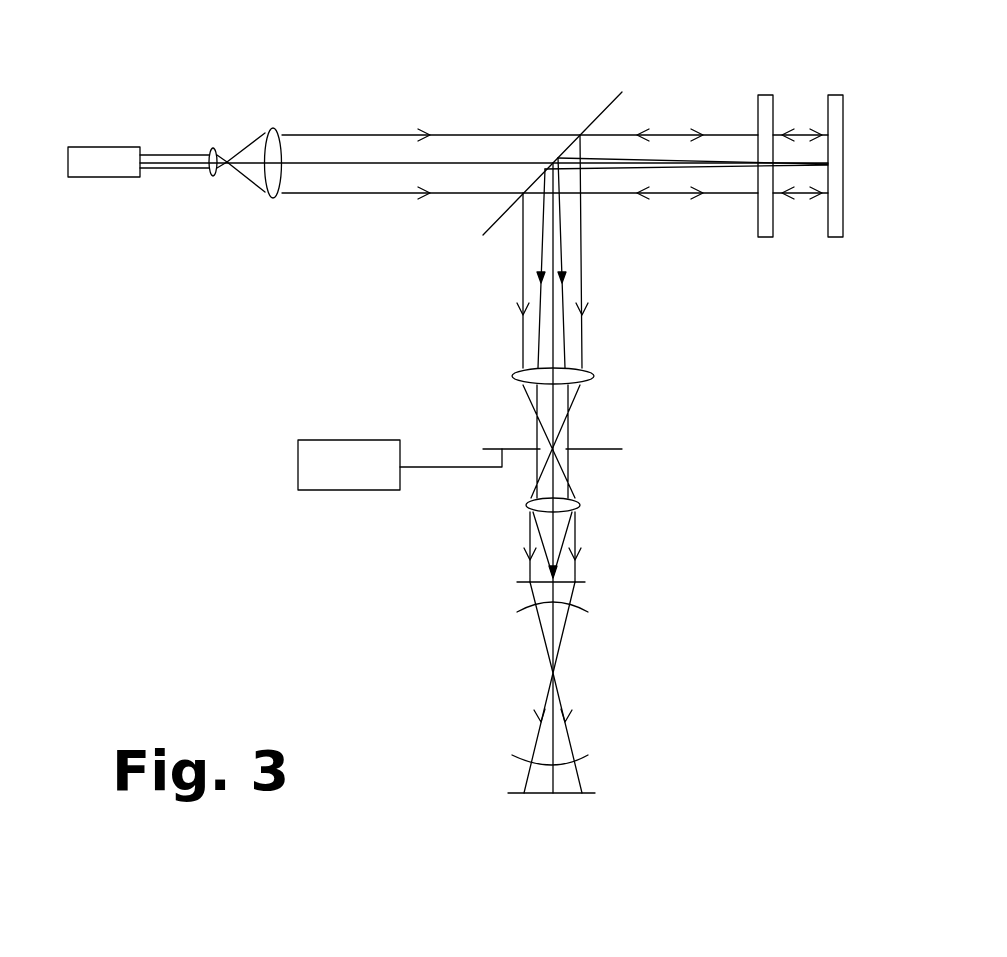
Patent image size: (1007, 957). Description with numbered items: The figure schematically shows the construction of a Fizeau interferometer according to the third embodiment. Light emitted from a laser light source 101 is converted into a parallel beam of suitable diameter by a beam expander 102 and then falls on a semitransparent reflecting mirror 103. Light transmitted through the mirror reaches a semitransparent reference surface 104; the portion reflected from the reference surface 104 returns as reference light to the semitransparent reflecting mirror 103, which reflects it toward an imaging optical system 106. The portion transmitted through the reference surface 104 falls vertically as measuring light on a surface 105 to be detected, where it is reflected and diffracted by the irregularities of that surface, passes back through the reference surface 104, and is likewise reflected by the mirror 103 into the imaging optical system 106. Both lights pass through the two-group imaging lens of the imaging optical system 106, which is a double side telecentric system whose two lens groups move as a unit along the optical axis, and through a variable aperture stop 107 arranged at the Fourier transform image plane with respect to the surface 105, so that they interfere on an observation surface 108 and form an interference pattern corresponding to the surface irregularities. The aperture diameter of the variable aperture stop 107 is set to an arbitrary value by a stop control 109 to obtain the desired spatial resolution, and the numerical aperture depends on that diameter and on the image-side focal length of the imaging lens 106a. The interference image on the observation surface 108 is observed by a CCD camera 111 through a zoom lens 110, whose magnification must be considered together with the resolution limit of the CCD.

The laser light source 101 is at (127, 147).
The beam expander 102 is at (292, 97).
The semitransparent reflecting mirror 103 is at (602, 108).
The semitransparent reference surface 104 is at (775, 123).
The surface to be detected 105 is at (827, 222).
The imaging optical system 106 is at (564, 451).
The imaging lens 106a is at (527, 504).
The variable aperture stop 107 is at (527, 448).
The observation surface 108 is at (585, 582).
The stop control 109 is at (352, 440).
The zoom lens 110 is at (613, 602).
The CCD camera 111 is at (540, 793).